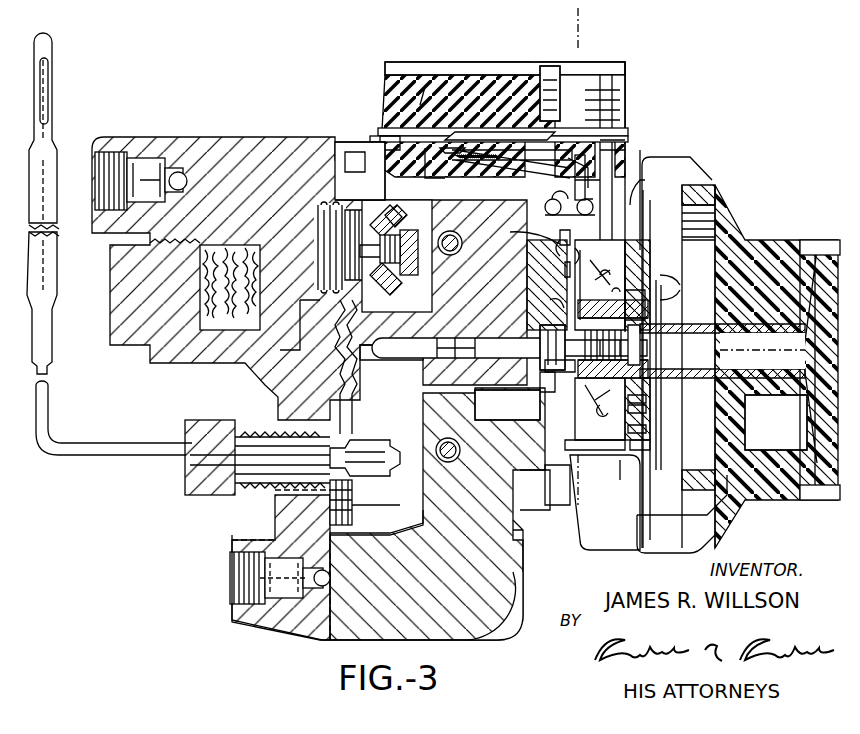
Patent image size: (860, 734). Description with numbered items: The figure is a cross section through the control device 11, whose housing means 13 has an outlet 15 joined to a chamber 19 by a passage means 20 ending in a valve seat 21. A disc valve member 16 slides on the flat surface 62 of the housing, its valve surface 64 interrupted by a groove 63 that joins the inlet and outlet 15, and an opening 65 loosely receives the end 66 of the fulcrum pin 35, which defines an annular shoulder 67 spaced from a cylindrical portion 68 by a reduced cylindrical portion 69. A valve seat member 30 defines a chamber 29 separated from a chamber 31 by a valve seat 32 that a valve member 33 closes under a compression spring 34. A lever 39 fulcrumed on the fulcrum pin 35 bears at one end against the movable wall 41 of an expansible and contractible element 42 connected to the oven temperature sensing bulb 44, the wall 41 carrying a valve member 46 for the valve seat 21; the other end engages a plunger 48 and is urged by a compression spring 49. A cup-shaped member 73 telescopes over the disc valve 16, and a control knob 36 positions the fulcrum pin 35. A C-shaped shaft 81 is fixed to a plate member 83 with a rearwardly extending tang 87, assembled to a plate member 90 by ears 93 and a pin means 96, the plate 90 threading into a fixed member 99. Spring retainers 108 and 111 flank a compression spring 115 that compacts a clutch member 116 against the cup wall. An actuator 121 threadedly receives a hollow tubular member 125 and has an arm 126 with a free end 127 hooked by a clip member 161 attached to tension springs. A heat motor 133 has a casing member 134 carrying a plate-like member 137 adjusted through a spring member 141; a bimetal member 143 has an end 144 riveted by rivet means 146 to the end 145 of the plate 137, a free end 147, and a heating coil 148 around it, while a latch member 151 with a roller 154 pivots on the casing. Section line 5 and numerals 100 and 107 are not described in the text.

The section line 5- 5 is at (596, 22).
The control device 11 is at (284, 122).
The housing means 13 is at (528, 535).
The outlet 15 is at (510, 440).
The disc valve member 16 is at (535, 490).
The chamber 19 is at (339, 368).
The passage means 20 is at (461, 436).
The valve seat 21 is at (400, 530).
The chamber 29 is at (377, 293).
The valve seat member 30 is at (387, 230).
The chamber 31 is at (398, 280).
The valve seat 32 is at (413, 271).
The valve member 33 is at (422, 236).
The compression spring 34 is at (413, 258).
The fulcrum pin 35 is at (413, 358).
The control knob 36 is at (818, 242).
The lever 39 is at (345, 318).
The movable wall 41 is at (357, 450).
The expansible and contractible element 42 is at (340, 408).
The oven temperature sensing bulb 44 is at (55, 290).
The valve member 46 is at (415, 512).
The plunger 48 is at (365, 244).
The compression spring 49 is at (317, 218).
The flat surface 62 is at (551, 275).
The groove 63 is at (557, 485).
The valve surface 64 is at (525, 270).
The opening 65 is at (548, 294).
The end of fulcrum pin 66 is at (546, 334).
The annular shoulder 67 is at (540, 347).
The cylindrical portion 68 is at (575, 295).
The reduced cylindrical portion 69 is at (542, 390).
The cup-shaped member 73 is at (593, 470).
The C-shaped shaft 81 is at (782, 328).
The plate member 83 is at (652, 410).
The rearwardly extending tang 87 is at (652, 445).
The plate member 90 is at (650, 404).
The ears 93 is at (655, 298).
The pin means 96 is at (665, 280).
The fixed member 99 is at (635, 333).
The spring 100 is at (628, 330).
The ring 107 is at (652, 430).
The spring retainer 108 is at (582, 383).
The spring retainer 111 is at (650, 369).
The compression spring 115 is at (595, 431).
The clutch member 116 is at (620, 463).
The actuator 121 is at (537, 413).
The hollow tubular member 125 is at (547, 367).
The arm 126 is at (562, 258).
The free end 127 is at (580, 199).
The heat motor 133 is at (642, 61).
The casing member 134 is at (385, 108).
The plate-like member 137 is at (487, 136).
The spring member 141 is at (620, 143).
The bimetal member 143 is at (445, 175).
The end of bimetal member 144 is at (428, 92).
The end of plate member 145 is at (380, 132).
The rivet means 146 is at (400, 150).
The free end of bimetal member 147 is at (595, 160).
The heating coil 148 is at (512, 174).
The latch member 151 is at (605, 195).
The roller 154 is at (573, 188).
The clip member 161 is at (524, 242).